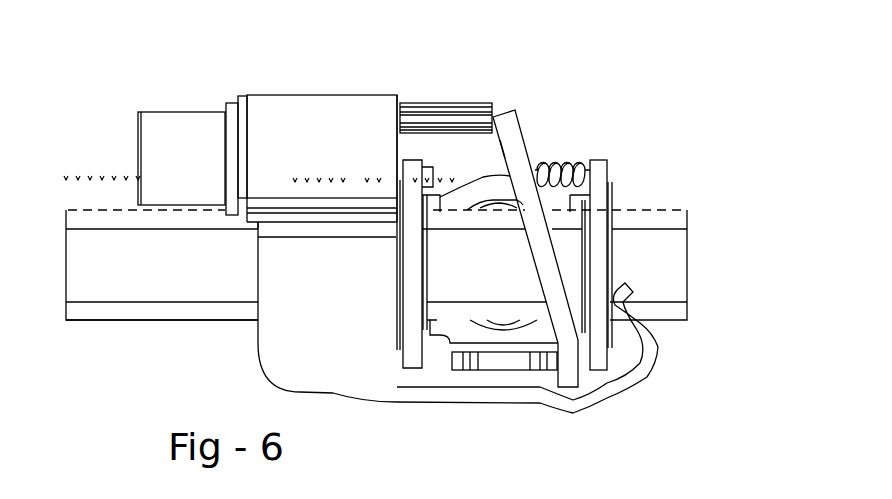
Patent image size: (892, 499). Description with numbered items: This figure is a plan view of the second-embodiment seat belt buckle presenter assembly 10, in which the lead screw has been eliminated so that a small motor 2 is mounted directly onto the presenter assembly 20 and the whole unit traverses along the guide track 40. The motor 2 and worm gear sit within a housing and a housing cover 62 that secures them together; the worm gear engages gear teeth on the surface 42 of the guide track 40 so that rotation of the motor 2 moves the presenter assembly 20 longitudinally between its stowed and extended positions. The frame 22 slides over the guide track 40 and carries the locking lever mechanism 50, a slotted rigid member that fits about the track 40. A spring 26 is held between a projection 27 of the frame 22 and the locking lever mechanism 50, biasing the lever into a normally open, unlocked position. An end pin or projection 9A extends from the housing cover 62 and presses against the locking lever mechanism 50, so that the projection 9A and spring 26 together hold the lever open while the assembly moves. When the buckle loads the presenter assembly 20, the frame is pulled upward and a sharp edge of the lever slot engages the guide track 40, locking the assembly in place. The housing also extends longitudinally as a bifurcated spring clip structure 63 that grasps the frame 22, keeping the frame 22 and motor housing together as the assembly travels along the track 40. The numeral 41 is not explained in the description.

The motor 2 is at (180, 140).
The seat belt buckle presenter assembly 10 is at (359, 112).
The housing cover 62 is at (315, 97).
The projection 27 is at (468, 190).
The end pin or projection 9A is at (438, 102).
The presenter assembly 20 is at (508, 98).
The locking lever mechanism 50 is at (527, 143).
The spring 26 is at (562, 165).
The frame 22 is at (597, 252).
The toothed surface 41 is at (75, 214).
The guide track 40 is at (100, 268).
The upper surface of the guide track 42 is at (98, 323).
The spring clip structure 63 is at (415, 395).